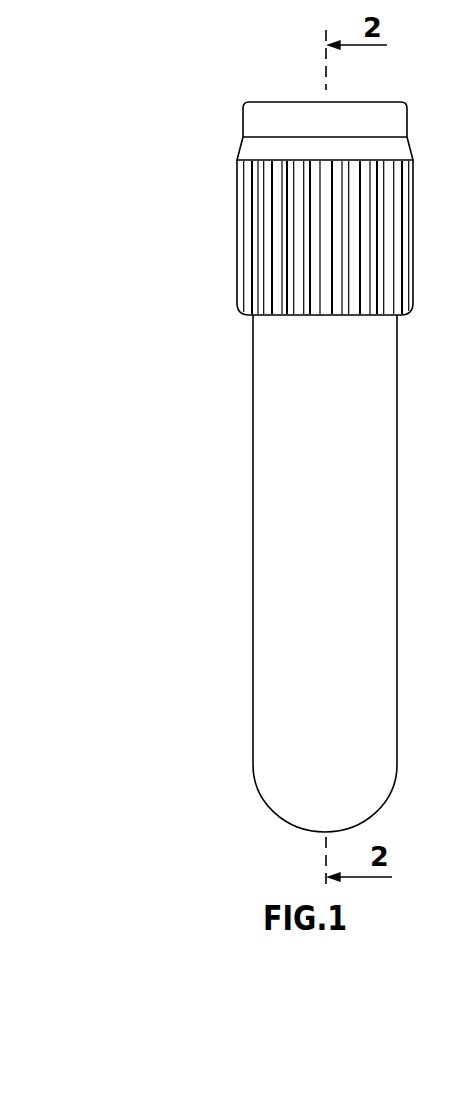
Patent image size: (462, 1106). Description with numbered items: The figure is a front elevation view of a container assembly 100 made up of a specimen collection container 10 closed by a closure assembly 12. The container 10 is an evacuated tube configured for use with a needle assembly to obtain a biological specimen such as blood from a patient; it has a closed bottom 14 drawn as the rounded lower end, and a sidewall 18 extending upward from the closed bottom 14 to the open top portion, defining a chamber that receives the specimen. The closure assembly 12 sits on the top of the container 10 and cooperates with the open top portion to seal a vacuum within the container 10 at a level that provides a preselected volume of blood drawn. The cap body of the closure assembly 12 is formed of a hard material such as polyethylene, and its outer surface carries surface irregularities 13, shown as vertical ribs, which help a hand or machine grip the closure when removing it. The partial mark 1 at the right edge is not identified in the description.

The specimen collection assembly 100 is at (112, 211).
The collection tube assembly 10 is at (214, 265).
The closure cap 12 is at (251, 228).
The knurled ribs of closure 13 is at (413, 253).
The closed bottom end of tube 14 is at (257, 786).
The tube sidewall 18 is at (272, 528).
The partially shown reference 1 is at (457, 146).